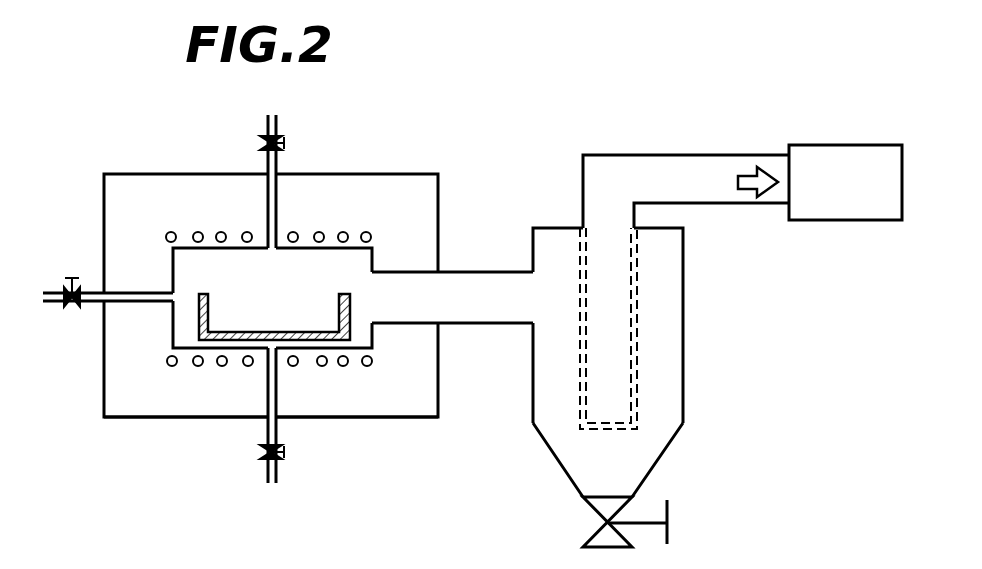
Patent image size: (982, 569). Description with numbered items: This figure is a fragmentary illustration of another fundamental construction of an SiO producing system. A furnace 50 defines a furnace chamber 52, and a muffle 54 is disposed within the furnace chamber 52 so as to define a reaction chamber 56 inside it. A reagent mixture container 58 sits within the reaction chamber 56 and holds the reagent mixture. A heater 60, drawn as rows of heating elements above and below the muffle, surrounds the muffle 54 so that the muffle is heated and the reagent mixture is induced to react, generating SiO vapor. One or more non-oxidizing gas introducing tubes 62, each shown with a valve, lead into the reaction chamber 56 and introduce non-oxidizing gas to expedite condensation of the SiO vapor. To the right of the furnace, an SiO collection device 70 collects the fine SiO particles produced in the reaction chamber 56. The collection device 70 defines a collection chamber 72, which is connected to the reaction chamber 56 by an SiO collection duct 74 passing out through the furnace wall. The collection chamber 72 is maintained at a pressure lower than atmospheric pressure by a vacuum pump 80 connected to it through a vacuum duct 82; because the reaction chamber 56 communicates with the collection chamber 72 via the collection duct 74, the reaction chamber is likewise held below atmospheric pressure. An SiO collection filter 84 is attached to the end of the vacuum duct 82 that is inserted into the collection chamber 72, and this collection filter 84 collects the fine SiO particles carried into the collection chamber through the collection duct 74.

The furnace 50 is at (385, 174).
The furnace chamber 52 is at (161, 404).
The muffle 54 is at (180, 254).
The reaction chamber 56 is at (175, 313).
The reagent mixture container 58 is at (352, 297).
The heater 60 is at (296, 231).
The non-oxidizing gas introducing tubes 62 is at (267, 166).
The SiO collection device 70 is at (686, 318).
The collection chamber 72 is at (668, 398).
The SiO collection duct 74 is at (482, 325).
The vacuum pump 80 is at (850, 145).
The vacuum duct 82 is at (675, 155).
The SiO collection filter 84 is at (637, 340).